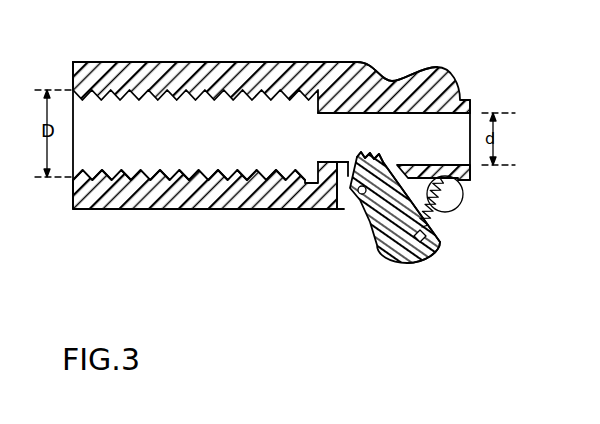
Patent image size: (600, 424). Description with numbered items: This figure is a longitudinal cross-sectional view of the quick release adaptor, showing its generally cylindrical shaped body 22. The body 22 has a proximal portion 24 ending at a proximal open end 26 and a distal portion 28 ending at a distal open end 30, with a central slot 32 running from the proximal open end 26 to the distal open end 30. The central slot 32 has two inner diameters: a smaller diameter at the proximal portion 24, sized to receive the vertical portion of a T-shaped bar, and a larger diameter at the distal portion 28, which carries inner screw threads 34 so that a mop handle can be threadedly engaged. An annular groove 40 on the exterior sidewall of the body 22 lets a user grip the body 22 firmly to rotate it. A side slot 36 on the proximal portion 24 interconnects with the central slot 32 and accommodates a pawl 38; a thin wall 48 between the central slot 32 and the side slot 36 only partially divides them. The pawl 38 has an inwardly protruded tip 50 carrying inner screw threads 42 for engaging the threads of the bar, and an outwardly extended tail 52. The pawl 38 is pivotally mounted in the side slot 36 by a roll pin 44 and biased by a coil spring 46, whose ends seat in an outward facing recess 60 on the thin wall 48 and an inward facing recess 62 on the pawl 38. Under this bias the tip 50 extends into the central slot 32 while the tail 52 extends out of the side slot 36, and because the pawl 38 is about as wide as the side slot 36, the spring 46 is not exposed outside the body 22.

The cylindrical shaped body 22 is at (180, 200).
The proximal portion 24 is at (350, 65).
The proximal open end 26 is at (471, 105).
The distal portion 28 is at (97, 62).
The distal open end 30 is at (72, 193).
The central slot 32 is at (225, 147).
The inner screw threads 34 is at (138, 170).
The side slot 36 is at (338, 208).
The pawl 38 is at (378, 250).
The annular groove 40 is at (398, 80).
The inner screw threads 42 is at (372, 153).
The roll pin 44 is at (349, 195).
The coil spring 46 is at (452, 222).
The thin wall 48 is at (470, 178).
The tip 50 is at (347, 168).
The tail 52 is at (418, 243).
The outward facing recess 60 is at (463, 198).
The inward facing recess 62 is at (440, 246).